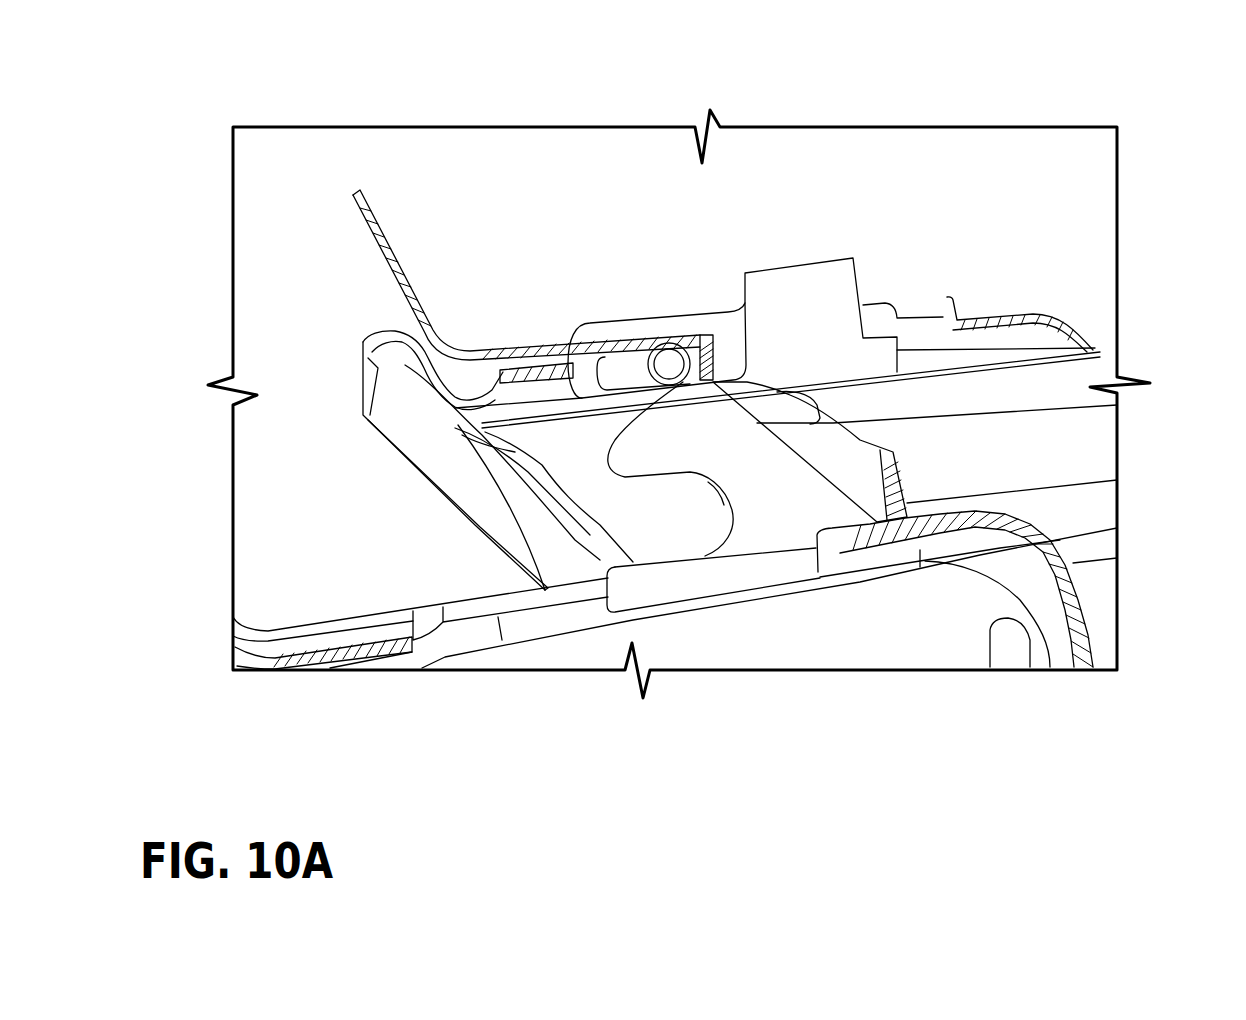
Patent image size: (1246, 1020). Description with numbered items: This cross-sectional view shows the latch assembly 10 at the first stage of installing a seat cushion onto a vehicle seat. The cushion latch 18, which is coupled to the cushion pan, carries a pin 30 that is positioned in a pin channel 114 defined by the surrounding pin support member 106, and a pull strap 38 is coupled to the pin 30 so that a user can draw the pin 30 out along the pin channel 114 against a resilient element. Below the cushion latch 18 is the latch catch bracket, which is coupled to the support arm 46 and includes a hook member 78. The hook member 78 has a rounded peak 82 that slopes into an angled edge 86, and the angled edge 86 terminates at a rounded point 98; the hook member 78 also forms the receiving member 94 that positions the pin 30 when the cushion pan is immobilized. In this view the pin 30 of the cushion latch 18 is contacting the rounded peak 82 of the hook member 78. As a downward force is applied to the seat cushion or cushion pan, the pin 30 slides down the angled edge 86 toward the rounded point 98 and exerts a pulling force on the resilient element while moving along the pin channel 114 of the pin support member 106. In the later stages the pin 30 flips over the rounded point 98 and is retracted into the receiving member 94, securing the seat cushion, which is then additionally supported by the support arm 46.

The latch assembly 10 is at (915, 208).
The cushion latch 18 is at (800, 303).
The pin 30 is at (668, 341).
The pull strap 38 is at (400, 263).
The support arm 46 is at (952, 535).
The hook member 78 is at (797, 484).
The rounded peak 82 is at (1102, 412).
The angled edge 86 is at (705, 390).
The receiving member 94 is at (692, 516).
The rounded point 98 is at (690, 390).
The pin support member 106 is at (617, 325).
The pin channel 114 is at (722, 334).